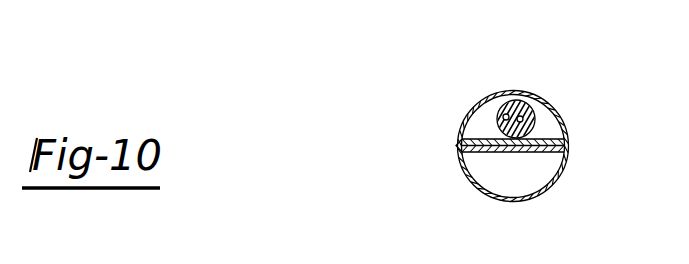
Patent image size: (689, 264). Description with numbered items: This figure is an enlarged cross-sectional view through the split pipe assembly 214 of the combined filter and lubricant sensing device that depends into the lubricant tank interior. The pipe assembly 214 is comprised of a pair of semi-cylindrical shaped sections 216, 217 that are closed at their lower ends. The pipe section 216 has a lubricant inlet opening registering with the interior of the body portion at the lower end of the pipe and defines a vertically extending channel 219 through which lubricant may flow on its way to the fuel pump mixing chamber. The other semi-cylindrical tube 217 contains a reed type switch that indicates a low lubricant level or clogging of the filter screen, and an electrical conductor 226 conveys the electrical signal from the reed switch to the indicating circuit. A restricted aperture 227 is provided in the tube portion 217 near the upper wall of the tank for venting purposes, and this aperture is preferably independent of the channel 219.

The split pipe assembly 214 is at (458, 90).
The semi-cylindrical shaped section 216 is at (533, 170).
The semi-cylindrical shaped section 217 is at (556, 106).
The vertically extending channel 219 is at (505, 180).
The electrical conductor 226 is at (532, 106).
The restricted aperture 227 is at (566, 128).